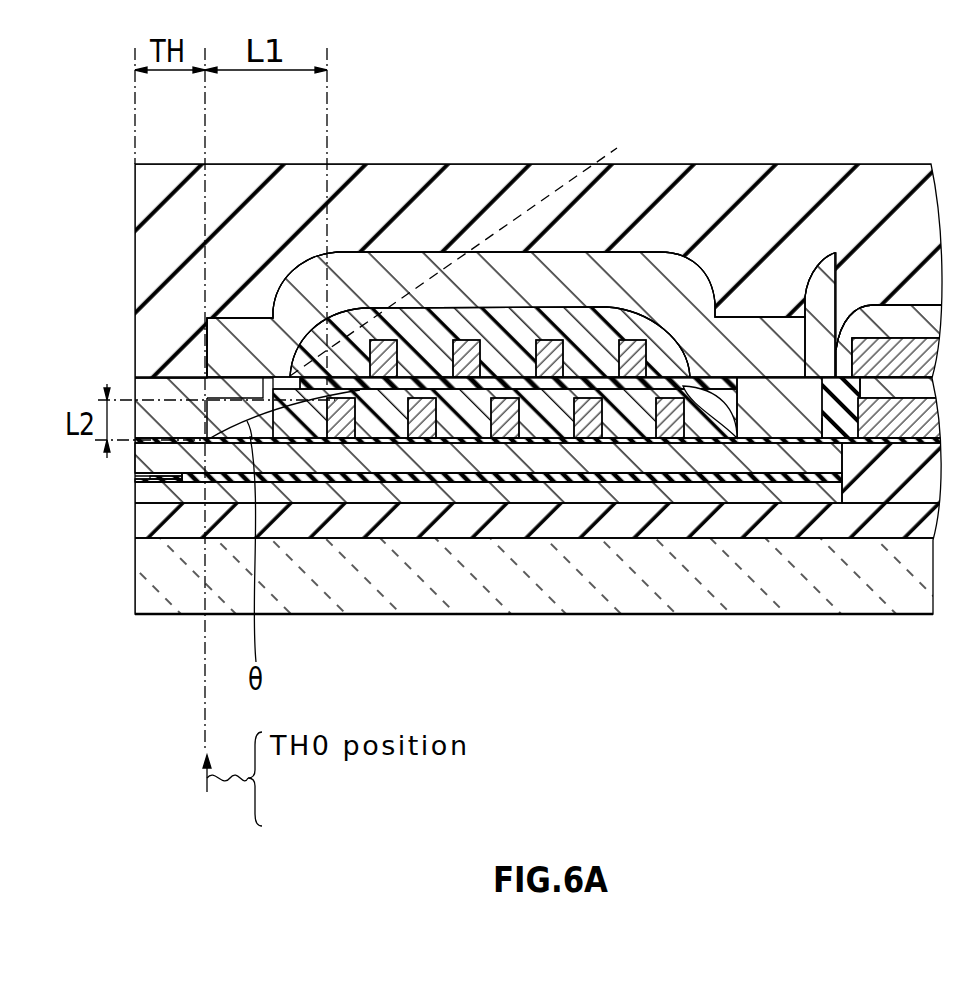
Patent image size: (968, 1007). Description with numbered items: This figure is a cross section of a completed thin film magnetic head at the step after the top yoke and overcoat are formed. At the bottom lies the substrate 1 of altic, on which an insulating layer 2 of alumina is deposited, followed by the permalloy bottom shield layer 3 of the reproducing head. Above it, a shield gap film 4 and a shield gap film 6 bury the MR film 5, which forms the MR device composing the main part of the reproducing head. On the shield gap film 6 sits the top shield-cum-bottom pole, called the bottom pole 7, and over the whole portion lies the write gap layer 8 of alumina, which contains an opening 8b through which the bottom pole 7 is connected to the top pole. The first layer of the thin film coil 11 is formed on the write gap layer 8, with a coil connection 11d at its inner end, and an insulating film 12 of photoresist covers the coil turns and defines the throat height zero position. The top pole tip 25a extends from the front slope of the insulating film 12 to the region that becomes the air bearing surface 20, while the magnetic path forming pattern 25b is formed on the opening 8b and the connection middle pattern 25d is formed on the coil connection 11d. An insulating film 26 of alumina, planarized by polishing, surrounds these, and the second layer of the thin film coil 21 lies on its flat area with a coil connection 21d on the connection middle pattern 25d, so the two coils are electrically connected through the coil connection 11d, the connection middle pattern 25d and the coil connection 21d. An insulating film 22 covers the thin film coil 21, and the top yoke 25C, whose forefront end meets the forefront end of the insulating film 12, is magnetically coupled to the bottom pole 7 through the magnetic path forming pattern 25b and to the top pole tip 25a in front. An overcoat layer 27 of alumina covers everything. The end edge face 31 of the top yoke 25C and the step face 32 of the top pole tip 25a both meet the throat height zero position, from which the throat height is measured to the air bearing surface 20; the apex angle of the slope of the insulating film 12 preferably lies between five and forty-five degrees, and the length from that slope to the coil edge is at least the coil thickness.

The substrate 1 is at (700, 598).
The insulating layer 2 is at (667, 533).
The bottom shield layer 3 is at (627, 495).
The shield gap film 4 is at (580, 480).
The MR film 5 is at (133, 483).
The shield gap film 6 is at (512, 477).
The bottom pole 7 is at (517, 462).
The write gap layer 8 is at (480, 442).
The opening 8b is at (777, 377).
The thin film coil 11 is at (425, 433).
The coil connection 11d is at (915, 430).
The insulating film 12 is at (372, 425).
The air bearing surface 20 is at (133, 478).
The thin film coil 21 is at (456, 338).
The coil connection 21d is at (907, 355).
The insulating film 22 is at (518, 322).
The top pole tip 25a is at (172, 433).
The magnetic path forming pattern 25b is at (747, 430).
The top yoke 25C is at (668, 283).
The connection middle pattern 25d is at (875, 393).
The insulating film 26 is at (823, 395).
The overcoat layer 27 is at (378, 168).
The end edge face 31 is at (473, 613).
The step face 32 is at (435, 556).